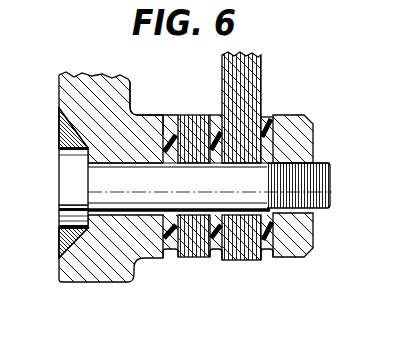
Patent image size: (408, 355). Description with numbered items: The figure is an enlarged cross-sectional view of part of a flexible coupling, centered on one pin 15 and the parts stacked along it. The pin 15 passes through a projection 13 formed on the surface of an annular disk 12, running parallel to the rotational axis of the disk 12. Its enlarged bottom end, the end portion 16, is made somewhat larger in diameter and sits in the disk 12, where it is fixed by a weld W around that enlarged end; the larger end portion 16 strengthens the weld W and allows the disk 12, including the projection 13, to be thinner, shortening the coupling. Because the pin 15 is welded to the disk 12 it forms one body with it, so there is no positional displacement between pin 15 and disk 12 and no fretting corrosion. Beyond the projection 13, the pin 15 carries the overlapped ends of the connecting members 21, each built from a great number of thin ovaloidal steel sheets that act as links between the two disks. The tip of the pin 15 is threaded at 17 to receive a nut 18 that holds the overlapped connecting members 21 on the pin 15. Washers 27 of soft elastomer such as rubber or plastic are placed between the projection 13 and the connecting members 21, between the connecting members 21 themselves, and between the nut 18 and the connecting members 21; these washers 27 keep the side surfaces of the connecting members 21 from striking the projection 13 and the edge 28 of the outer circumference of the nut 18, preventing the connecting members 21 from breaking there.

The annular disk 12 is at (55, 93).
The weld W is at (60, 138).
The projection 13 is at (151, 127).
The washer 27 is at (174, 113).
The edge of nut outer circumference 28 is at (272, 113).
The connecting member 21 is at (247, 267).
The nut 18 is at (296, 118).
The threaded tip 17 is at (302, 160).
The pin 15 is at (88, 208).
The end portion of pin 16 is at (63, 181).